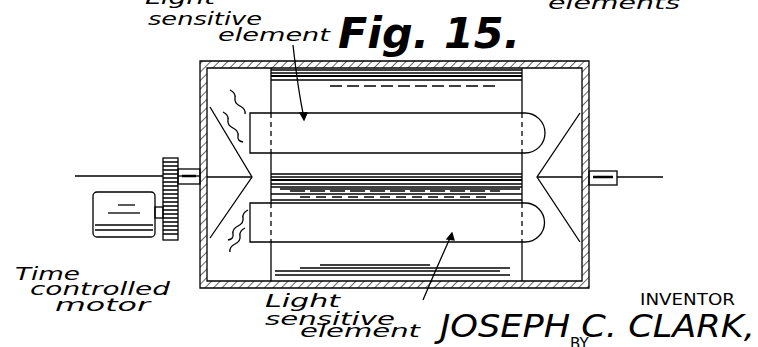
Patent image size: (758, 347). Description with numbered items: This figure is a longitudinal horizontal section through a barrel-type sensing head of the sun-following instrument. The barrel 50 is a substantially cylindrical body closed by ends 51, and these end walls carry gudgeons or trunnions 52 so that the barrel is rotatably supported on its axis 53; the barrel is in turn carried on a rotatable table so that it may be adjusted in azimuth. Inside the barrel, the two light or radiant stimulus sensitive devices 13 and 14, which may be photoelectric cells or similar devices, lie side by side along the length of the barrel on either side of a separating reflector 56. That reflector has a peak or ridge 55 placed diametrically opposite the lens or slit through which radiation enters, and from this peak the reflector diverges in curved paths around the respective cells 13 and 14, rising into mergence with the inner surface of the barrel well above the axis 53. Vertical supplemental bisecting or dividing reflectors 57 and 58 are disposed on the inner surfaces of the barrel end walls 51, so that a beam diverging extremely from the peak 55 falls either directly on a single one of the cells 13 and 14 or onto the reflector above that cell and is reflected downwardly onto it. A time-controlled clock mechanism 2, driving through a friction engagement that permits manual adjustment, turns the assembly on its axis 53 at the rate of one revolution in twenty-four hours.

The clock mechanism 2 is at (100, 238).
The light sensitive device 13 is at (397, 133).
The light sensitive device 14 is at (397, 222).
The barrel 50 is at (560, 158).
The barrel ends 51 is at (200, 93).
The gudgeons or trunnions 52 is at (190, 167).
The axis 53 is at (111, 160).
The peak or ridge 55 is at (421, 176).
The separating reflector 56 is at (345, 189).
The supplemental bisecting reflector 57 is at (222, 137).
The supplemental bisecting reflector 58 is at (565, 195).